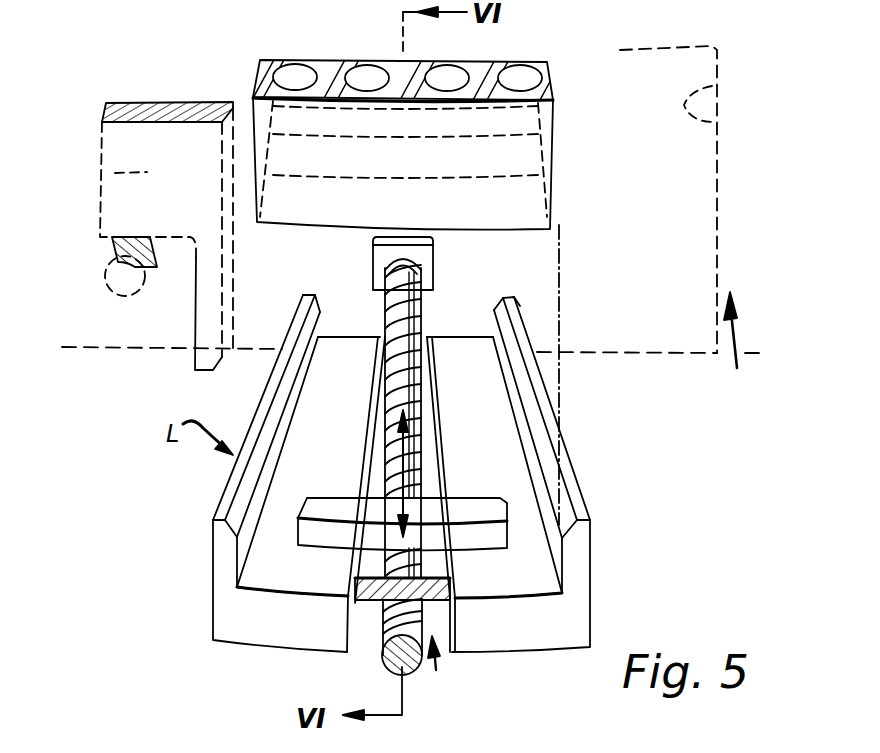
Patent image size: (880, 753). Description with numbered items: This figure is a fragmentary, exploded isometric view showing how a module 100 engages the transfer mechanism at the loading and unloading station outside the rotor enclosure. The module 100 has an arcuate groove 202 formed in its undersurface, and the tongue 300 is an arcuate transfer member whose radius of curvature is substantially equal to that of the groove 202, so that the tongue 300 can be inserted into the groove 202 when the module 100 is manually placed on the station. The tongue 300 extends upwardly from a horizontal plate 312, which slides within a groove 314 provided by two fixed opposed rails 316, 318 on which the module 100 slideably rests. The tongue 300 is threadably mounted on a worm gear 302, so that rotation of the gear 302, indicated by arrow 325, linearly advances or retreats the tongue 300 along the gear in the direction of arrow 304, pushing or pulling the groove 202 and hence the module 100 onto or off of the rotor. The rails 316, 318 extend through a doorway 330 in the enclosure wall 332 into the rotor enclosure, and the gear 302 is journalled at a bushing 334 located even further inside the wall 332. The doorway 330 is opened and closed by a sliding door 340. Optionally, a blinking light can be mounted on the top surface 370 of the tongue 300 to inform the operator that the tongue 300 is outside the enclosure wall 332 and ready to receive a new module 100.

The module 100 is at (599, 166).
The arcuate groove 202 is at (508, 197).
The tongue 300 is at (473, 505).
The worm gear 302 is at (383, 640).
The arrow 304 is at (384, 468).
The horizontal plate 312 is at (427, 561).
The groove 314 is at (361, 617).
The rail 316 is at (305, 634).
The rail 318 is at (535, 637).
The arrow 325 is at (420, 634).
The doorway 330 is at (720, 121).
The enclosure wall 332 is at (731, 345).
The bushing 334 is at (416, 262).
The sliding door 340 is at (103, 178).
The top surface 370 is at (328, 509).